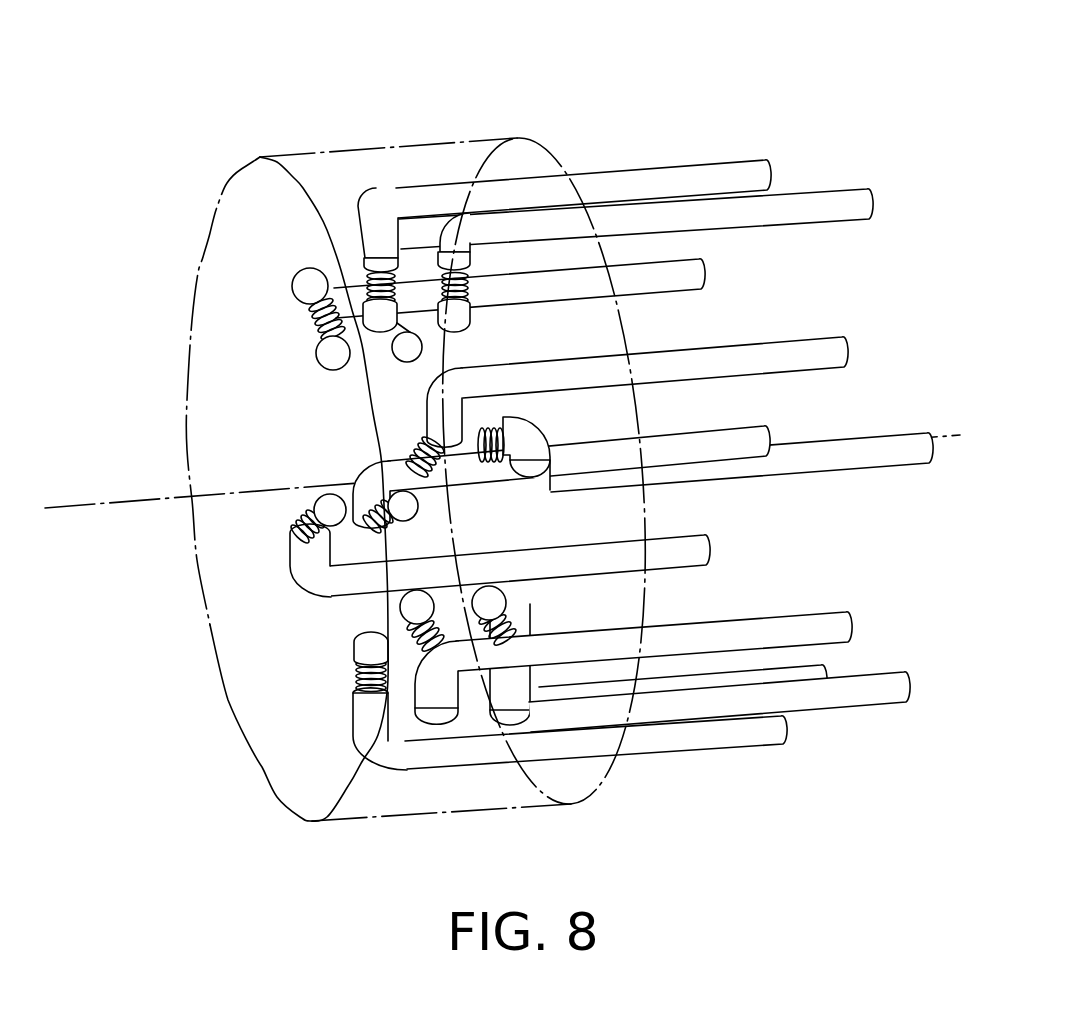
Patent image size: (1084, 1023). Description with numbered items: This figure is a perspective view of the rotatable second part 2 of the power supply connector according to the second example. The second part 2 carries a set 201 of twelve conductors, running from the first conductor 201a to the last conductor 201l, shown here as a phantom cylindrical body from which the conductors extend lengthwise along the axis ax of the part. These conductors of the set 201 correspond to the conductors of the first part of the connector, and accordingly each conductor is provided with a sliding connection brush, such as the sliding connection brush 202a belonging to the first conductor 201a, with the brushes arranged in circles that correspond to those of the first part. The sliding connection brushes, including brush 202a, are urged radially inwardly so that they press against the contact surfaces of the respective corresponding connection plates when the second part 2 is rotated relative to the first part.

The second part 2 is at (316, 128).
The set of conductors 201 is at (611, 434).
The conductor 201a is at (440, 200).
The conductor 201l is at (698, 735).
The sliding connection brush 202a is at (372, 365).
The axis of the assembly ax is at (112, 502).